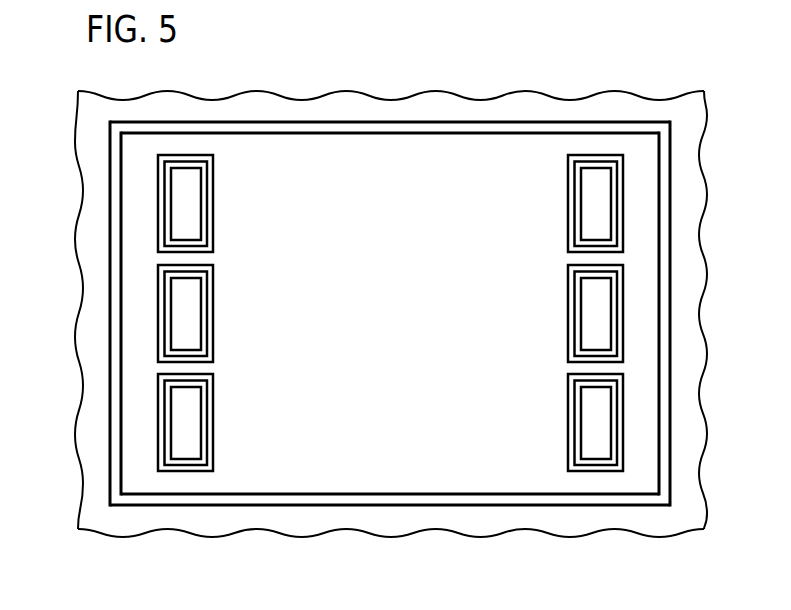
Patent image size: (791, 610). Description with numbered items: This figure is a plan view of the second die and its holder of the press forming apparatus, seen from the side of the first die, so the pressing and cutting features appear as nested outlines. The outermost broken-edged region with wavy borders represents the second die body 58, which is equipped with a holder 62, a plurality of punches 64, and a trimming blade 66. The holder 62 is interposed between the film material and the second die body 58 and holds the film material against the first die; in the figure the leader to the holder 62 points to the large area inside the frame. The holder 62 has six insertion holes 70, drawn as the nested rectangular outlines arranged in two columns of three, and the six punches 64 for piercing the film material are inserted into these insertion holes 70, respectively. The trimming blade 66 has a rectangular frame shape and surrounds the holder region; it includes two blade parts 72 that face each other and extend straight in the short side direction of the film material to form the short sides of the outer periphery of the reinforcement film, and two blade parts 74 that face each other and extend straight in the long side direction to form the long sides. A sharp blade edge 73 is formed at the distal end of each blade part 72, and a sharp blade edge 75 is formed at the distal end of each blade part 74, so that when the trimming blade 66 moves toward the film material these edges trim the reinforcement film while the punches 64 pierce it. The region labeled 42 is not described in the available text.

The display device 42 is at (263, 90).
The second die body 58 is at (648, 103).
The holder 62 is at (505, 476).
The punch 64 is at (203, 223).
The trimming blade 66 is at (545, 120).
The insertion hole 70 is at (160, 200).
The blade part 72 is at (672, 233).
The blade edge 73 is at (661, 288).
The blade part 74 is at (443, 121).
The blade edge 75 is at (336, 132).